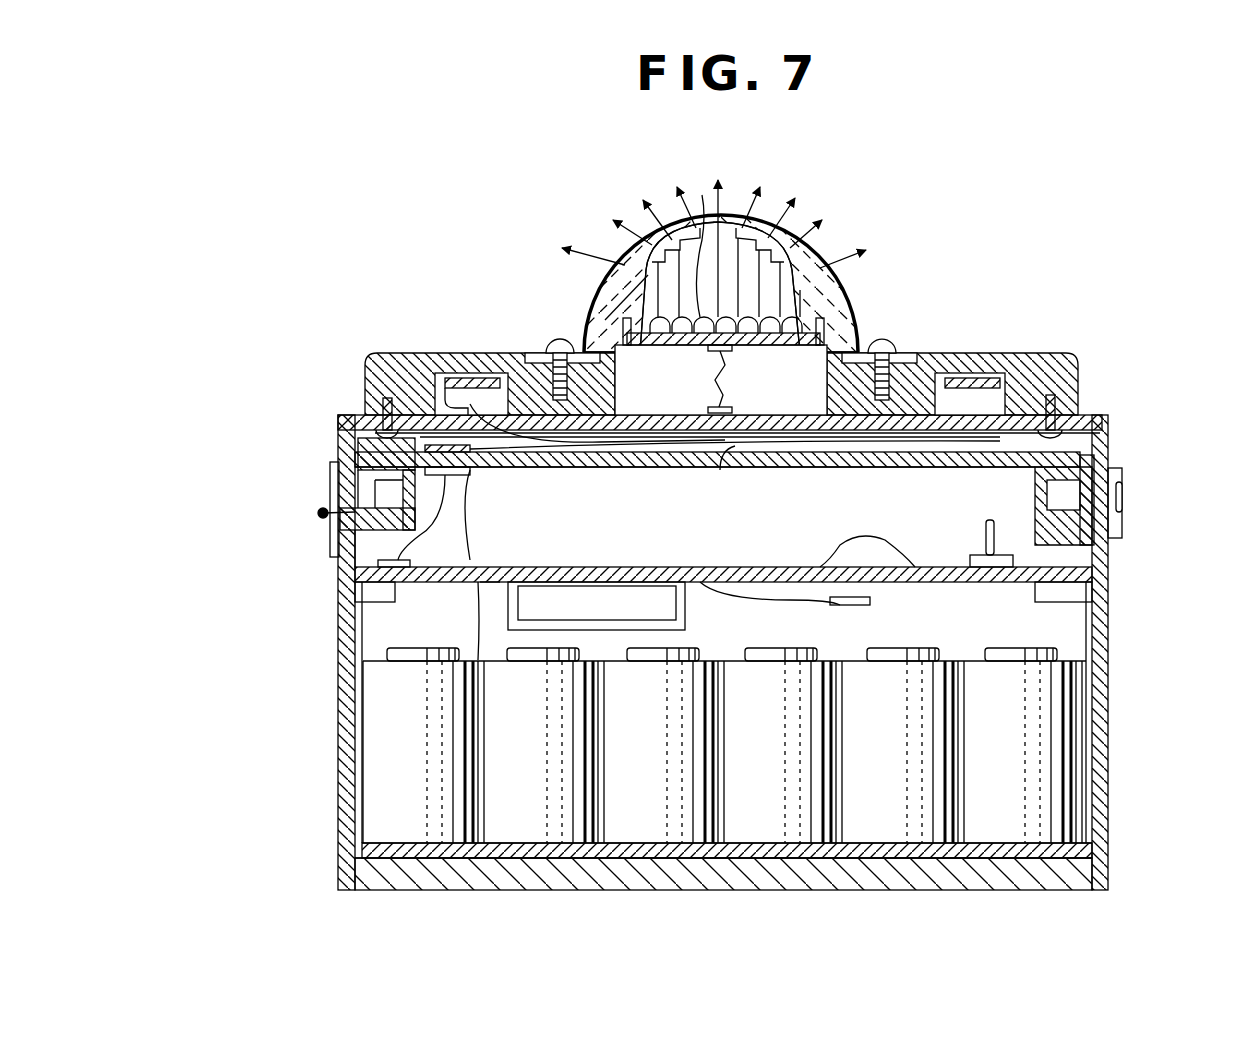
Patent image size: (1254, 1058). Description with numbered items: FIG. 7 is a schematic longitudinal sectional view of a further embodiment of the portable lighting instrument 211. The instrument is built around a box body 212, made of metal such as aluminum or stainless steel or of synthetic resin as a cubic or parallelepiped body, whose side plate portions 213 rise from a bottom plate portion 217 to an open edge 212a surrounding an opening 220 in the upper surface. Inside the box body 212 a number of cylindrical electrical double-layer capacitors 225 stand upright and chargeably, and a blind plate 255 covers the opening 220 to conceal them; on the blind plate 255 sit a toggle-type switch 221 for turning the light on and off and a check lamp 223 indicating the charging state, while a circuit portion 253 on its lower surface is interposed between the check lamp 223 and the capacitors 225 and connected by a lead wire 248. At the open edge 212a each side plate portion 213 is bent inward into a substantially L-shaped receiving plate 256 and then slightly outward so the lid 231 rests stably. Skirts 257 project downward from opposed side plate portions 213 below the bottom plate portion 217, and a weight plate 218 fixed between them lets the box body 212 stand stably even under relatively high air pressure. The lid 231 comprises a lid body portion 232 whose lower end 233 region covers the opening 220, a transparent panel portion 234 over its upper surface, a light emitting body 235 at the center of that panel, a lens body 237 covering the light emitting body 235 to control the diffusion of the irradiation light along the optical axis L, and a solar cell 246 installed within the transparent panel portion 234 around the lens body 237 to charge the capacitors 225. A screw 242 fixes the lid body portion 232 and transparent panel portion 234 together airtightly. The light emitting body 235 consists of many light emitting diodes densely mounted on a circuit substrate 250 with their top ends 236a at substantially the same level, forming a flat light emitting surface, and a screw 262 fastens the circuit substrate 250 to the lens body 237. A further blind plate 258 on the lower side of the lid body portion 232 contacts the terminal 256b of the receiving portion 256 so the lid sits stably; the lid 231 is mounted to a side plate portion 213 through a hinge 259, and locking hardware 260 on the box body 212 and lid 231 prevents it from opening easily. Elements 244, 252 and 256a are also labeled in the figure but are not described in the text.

The portable lighting instrument 211 is at (940, 233).
The box body 212 is at (1110, 748).
The side plate portion 213 is at (355, 590).
The open edge 212a is at (1030, 470).
The bottom plate portion 217 is at (690, 855).
The weight plate 218 is at (795, 870).
The opening 220 is at (480, 540).
The switch 221 is at (985, 530).
The check lamp 223 is at (860, 545).
The electrical double-layer capacitors 225 is at (528, 830).
The lid 231 is at (1102, 418).
The lid body portion 232 is at (1082, 460).
The lower end 233 is at (1124, 510).
The transparent panel portion 234 is at (415, 370).
The light emitting body 235 is at (828, 298).
The top ends 236a is at (742, 230).
The lens body 237 is at (600, 305).
The screw 242 is at (380, 400).
The right cap housing 244 is at (1035, 385).
The solar cell 246 is at (465, 378).
The lead wire 248 is at (430, 378).
The circuit substrate 250 is at (723, 356).
The screws 252 is at (884, 348).
The circuit portion 253 is at (686, 608).
The blind plate 255 is at (992, 583).
The receiving plate 256 is at (1038, 585).
The bracket arm 256a is at (1092, 540).
The terminal 256b is at (1060, 395).
The skirts 257 is at (338, 880).
The blind plate 258 is at (722, 470).
The hinge 259 is at (320, 510).
The locking hardware 260 is at (1124, 525).
The screw 262 is at (755, 379).
The optical axis L is at (714, 224).